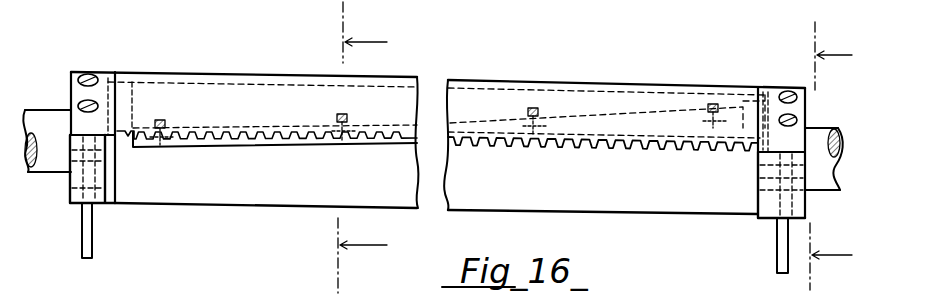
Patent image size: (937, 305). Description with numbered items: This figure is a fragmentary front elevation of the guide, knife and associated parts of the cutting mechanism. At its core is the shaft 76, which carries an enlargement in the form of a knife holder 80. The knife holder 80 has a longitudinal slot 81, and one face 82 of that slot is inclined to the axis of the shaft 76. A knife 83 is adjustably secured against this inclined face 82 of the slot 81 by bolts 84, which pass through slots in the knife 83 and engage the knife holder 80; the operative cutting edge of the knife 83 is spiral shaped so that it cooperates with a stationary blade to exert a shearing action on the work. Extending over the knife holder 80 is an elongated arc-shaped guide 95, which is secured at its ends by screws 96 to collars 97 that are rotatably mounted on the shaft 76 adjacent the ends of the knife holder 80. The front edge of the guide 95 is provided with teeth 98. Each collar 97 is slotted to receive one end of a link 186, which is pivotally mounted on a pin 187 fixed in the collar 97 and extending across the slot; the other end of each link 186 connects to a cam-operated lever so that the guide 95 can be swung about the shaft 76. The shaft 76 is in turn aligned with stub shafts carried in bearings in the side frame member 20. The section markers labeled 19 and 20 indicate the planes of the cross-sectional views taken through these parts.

The shaft 76 is at (50, 147).
The knife holder 80 is at (225, 209).
The longitudinal slot 81 is at (650, 211).
The face 82 is at (598, 117).
The knife 83 is at (263, 144).
The bolts 84 is at (160, 120).
The guide 95 is at (283, 75).
The screws 96 is at (97, 100).
The collars 97 is at (98, 204).
The teeth 98 is at (492, 146).
The link 186 is at (82, 247).
The pin 187 is at (73, 158).
The section line 19- 19 is at (833, 154).
The side frame member 20 is at (364, 147).